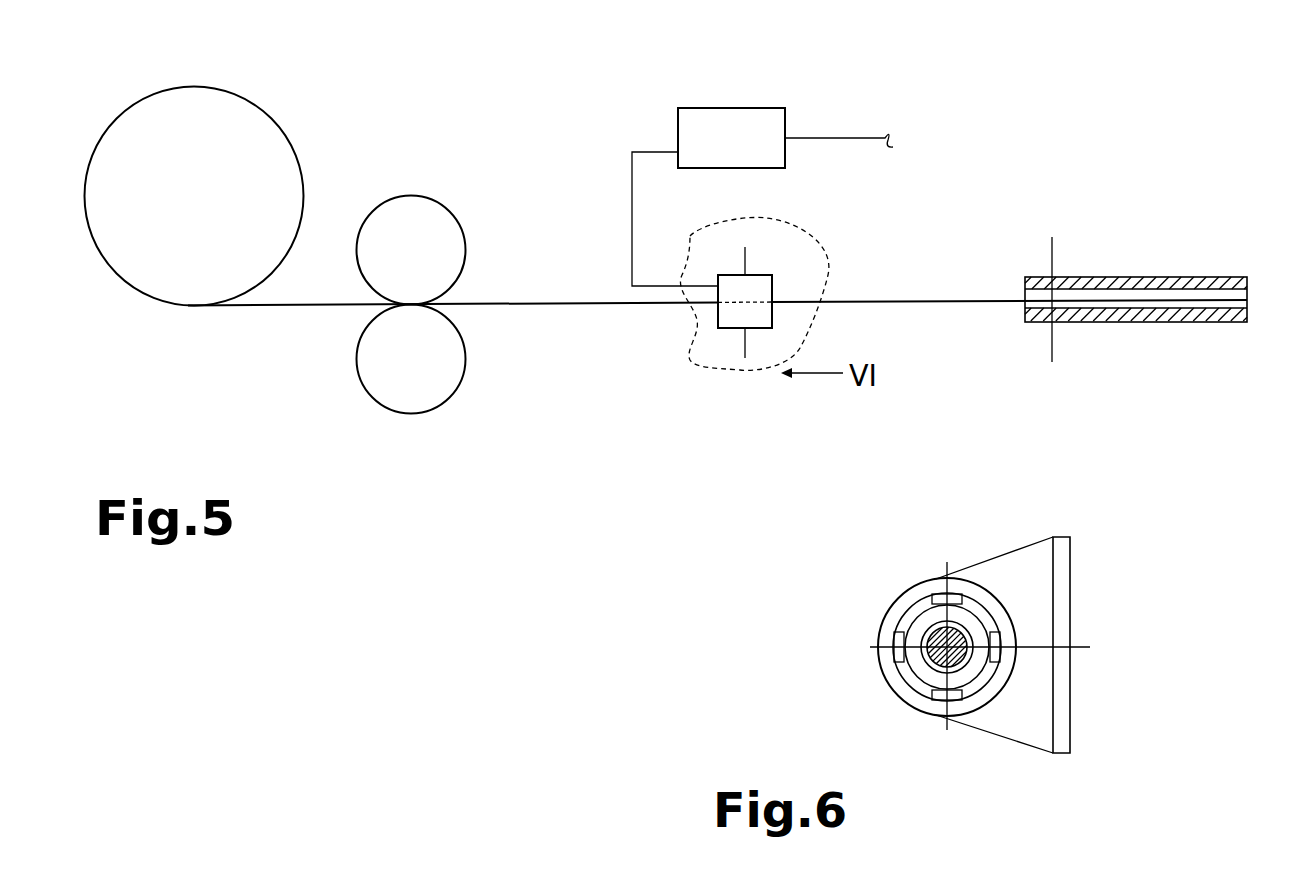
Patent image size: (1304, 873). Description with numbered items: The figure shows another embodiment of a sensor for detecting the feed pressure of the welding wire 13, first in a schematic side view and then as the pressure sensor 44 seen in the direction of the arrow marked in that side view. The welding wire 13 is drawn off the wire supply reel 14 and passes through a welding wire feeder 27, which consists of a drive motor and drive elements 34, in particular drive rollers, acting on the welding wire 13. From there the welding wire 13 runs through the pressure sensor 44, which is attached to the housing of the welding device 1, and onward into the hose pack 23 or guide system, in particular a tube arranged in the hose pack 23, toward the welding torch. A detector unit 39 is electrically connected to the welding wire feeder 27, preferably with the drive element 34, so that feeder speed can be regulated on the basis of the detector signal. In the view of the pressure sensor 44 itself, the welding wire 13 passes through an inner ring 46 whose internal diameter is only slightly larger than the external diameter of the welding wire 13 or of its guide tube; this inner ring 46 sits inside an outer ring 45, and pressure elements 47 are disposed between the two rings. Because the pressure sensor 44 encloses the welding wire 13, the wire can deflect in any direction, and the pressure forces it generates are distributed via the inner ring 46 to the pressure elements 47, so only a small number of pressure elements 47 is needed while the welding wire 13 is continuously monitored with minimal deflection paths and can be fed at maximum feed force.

In FIG. 5, the welding device 1 is at (810, 270).
In FIG. 5, the welding wire 13 is at (308, 306).
In FIG. 6, the welding wire 13 is at (930, 660).
In FIG. 5, the wire supply reel 14 is at (179, 270).
In FIG. 5, the hose pack 23 is at (1152, 245).
In FIG. 5, the welding wire feeder 27 is at (400, 297).
In FIG. 5, the drive elements 34 is at (412, 222).
In FIG. 5, the detector unit 39 is at (725, 130).
In FIG. 5, the pressure sensor 44 is at (768, 252).
In FIG. 6, the pressure sensor 44 is at (1120, 552).
In FIG. 6, the outer ring 45 is at (907, 597).
In FIG. 6, the inner ring 46 is at (920, 627).
In FIG. 6, the pressure elements 47 is at (938, 597).